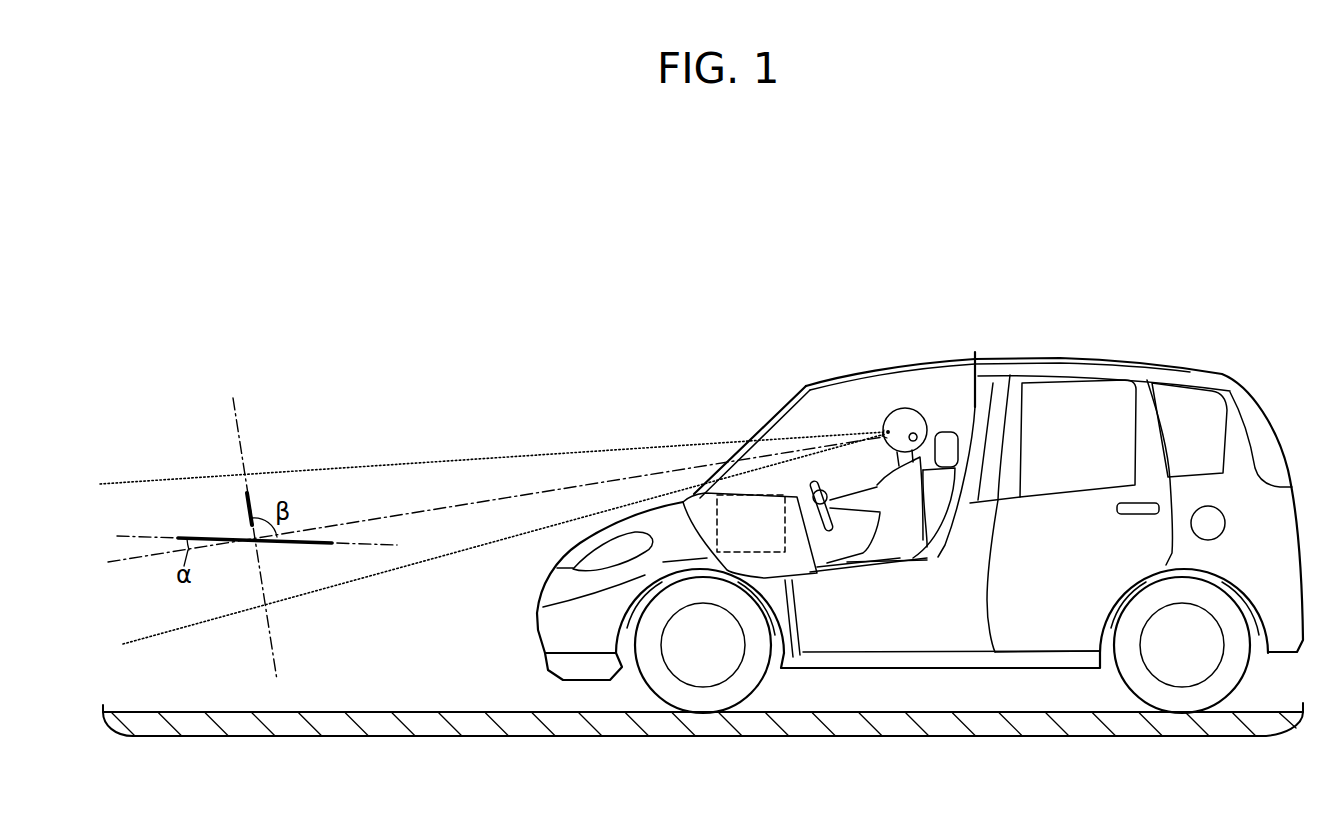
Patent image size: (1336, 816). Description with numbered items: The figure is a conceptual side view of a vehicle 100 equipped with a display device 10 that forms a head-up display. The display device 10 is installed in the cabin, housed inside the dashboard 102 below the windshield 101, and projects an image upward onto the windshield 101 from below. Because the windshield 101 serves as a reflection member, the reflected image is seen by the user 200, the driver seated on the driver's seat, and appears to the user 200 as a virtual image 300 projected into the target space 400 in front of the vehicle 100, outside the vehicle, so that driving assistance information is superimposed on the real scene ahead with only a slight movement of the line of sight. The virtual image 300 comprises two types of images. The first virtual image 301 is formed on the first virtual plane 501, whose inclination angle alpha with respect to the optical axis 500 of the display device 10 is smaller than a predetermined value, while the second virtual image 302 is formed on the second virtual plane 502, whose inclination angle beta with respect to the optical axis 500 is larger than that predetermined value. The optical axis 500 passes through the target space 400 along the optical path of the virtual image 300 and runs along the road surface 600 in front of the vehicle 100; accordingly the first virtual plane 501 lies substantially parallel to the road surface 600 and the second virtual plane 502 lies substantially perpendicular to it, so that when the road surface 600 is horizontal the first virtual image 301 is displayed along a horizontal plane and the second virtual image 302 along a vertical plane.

The display device 10 is at (716, 528).
The vehicle 100 is at (1219, 372).
The windshield 101 is at (765, 424).
The dashboard 102 is at (798, 557).
The user 200 is at (913, 417).
The virtual image 300 is at (264, 469).
The first virtual image 301 is at (317, 540).
The second virtual image 302 is at (249, 494).
The target space 400 is at (518, 457).
The optical axis 500 is at (138, 562).
The first virtual plane 501 is at (153, 537).
The second virtual plane 502 is at (232, 407).
The road surface 600 is at (428, 710).